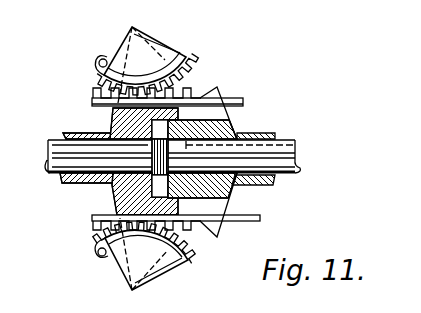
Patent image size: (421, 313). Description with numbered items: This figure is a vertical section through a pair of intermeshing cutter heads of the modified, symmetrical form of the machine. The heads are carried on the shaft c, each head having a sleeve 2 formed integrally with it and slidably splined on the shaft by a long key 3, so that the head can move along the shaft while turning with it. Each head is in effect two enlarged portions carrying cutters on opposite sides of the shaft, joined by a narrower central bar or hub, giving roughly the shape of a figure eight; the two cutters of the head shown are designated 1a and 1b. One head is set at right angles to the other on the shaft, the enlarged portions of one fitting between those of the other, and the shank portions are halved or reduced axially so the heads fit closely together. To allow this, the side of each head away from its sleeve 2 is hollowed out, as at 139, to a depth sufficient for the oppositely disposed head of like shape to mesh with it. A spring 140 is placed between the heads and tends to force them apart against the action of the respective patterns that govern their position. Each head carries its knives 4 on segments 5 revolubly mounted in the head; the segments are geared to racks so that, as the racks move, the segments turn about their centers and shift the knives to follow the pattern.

The cutter 1a is at (182, 88).
The cutter 1b is at (215, 230).
The sleeve 2 is at (262, 133).
The key 3 is at (292, 140).
The knife 4 is at (146, 30).
The segment 5 is at (146, 160).
The hollowed-out portion 139 is at (152, 188).
The spring 140 is at (148, 150).
The shaft c is at (297, 172).